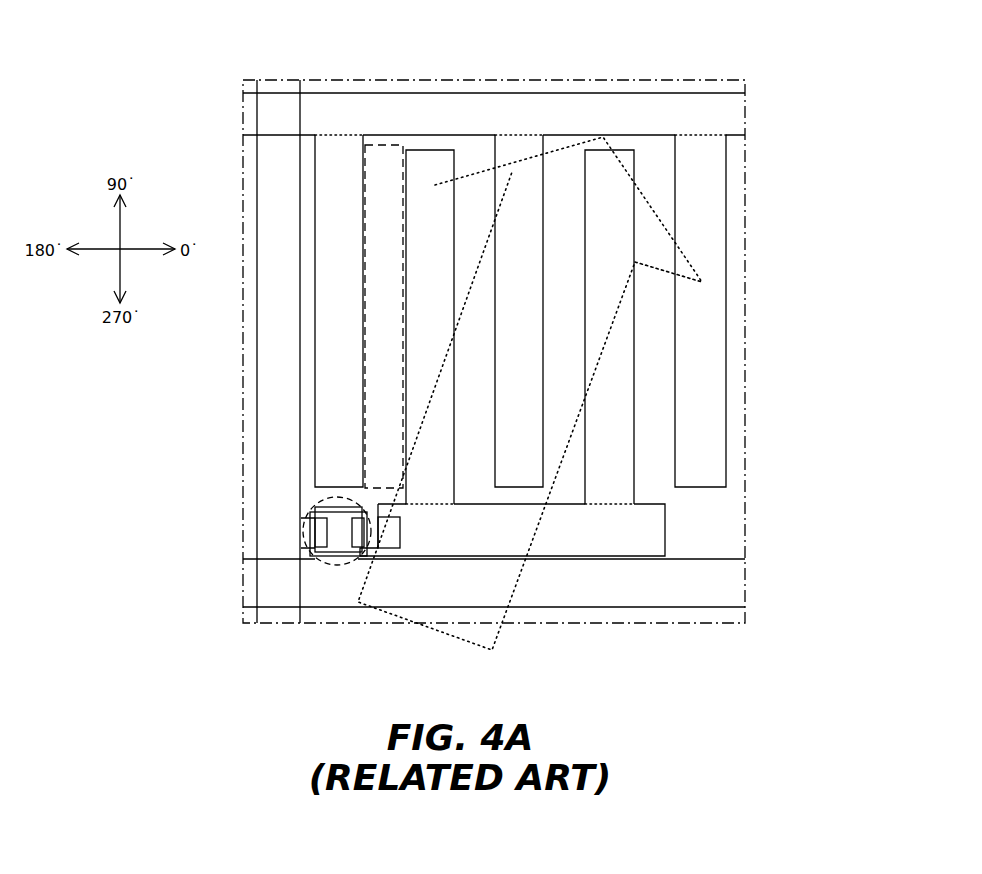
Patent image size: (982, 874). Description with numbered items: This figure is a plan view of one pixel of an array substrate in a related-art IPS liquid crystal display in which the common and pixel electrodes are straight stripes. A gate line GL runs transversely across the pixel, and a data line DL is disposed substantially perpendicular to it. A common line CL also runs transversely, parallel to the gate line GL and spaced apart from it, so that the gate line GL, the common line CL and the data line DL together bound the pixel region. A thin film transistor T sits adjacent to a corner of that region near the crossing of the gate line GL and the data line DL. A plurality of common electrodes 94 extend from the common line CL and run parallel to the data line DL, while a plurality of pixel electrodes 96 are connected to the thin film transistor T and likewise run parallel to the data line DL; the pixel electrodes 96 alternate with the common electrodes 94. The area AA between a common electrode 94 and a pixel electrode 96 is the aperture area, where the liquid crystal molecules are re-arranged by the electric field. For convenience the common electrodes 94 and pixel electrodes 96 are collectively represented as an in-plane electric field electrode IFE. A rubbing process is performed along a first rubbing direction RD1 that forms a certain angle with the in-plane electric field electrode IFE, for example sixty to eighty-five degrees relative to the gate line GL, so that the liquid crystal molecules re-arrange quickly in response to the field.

The common electrodes 94 is at (342, 217).
The pixel electrodes 96 is at (450, 345).
The common line CL is at (745, 93).
The gate line GL is at (745, 559).
The data line DL is at (300, 623).
The thin film transistor T is at (340, 565).
The aperture area AA is at (383, 143).
The first rubbing direction RD1 is at (463, 640).
The in-plane electric field electrode IFE is at (833, 218).